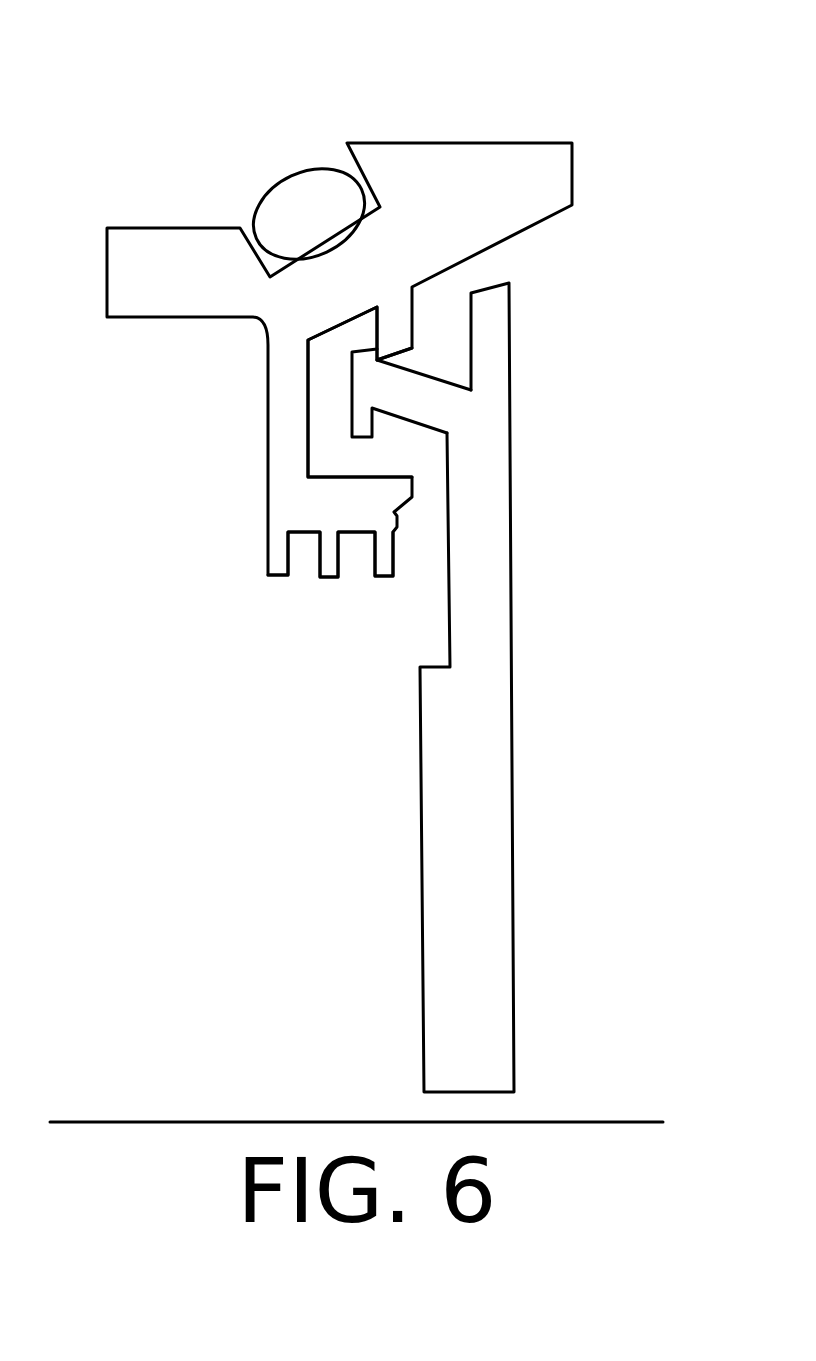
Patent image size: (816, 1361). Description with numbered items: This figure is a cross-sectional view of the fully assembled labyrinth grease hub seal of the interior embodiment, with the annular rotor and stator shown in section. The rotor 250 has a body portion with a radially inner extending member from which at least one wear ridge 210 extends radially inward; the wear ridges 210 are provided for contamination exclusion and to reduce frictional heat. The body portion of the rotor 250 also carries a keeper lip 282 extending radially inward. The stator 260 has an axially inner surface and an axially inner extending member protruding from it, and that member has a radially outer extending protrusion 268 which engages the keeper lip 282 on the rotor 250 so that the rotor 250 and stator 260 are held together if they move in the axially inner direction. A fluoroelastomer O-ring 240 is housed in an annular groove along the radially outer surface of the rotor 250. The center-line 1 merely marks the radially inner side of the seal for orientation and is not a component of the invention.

The rotor 250 is at (195, 257).
The fluoroelastomer O-ring 240 is at (320, 197).
The keeper lip 282 is at (400, 318).
The radially outer extending protrusion 268 is at (368, 368).
The stator 260 is at (475, 840).
The wear ridge 210 is at (328, 577).
The center-line 1 is at (553, 1122).